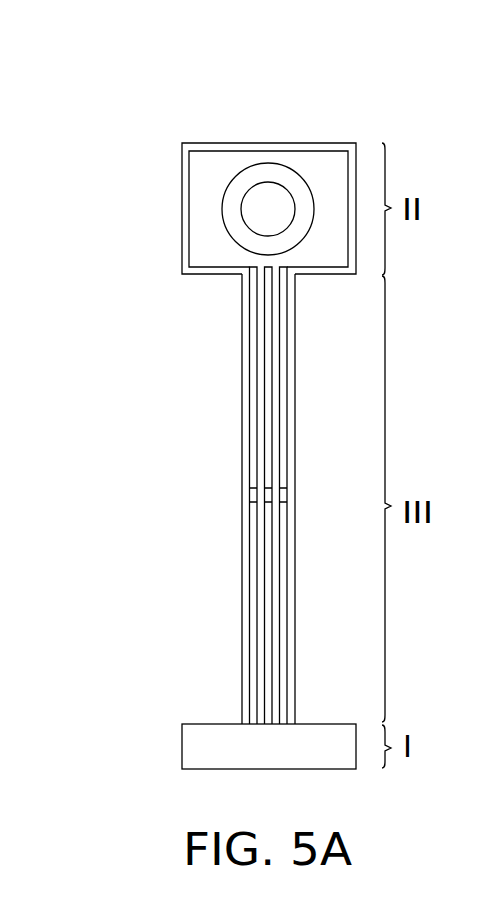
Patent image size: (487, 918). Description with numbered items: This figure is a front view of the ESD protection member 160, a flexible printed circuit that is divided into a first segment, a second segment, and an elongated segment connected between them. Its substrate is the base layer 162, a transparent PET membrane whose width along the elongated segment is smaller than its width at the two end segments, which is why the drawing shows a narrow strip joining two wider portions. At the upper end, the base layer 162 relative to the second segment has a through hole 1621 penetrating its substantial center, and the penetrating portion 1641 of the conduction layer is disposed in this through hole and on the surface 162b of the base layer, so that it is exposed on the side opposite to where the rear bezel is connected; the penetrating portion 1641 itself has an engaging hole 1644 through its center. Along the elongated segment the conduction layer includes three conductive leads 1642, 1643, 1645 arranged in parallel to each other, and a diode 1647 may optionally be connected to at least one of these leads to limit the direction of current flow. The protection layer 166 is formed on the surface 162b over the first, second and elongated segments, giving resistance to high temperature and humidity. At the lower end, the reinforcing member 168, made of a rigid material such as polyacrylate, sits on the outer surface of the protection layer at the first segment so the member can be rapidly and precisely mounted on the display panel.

The ESD protection member 160 is at (102, 96).
The base layer 162 is at (323, 141).
The surface 162b is at (184, 162).
The protection layer 166 is at (212, 237).
The penetrating portion 1641 is at (224, 196).
The through hole 1621 is at (264, 202).
The engaging hole 1644 is at (268, 209).
The conductive lead 1642 is at (255, 383).
The conductive lead 1643 is at (272, 423).
The conductive lead 1645 is at (285, 462).
The diode 1647 is at (252, 492).
The reinforcing member 168 is at (210, 752).